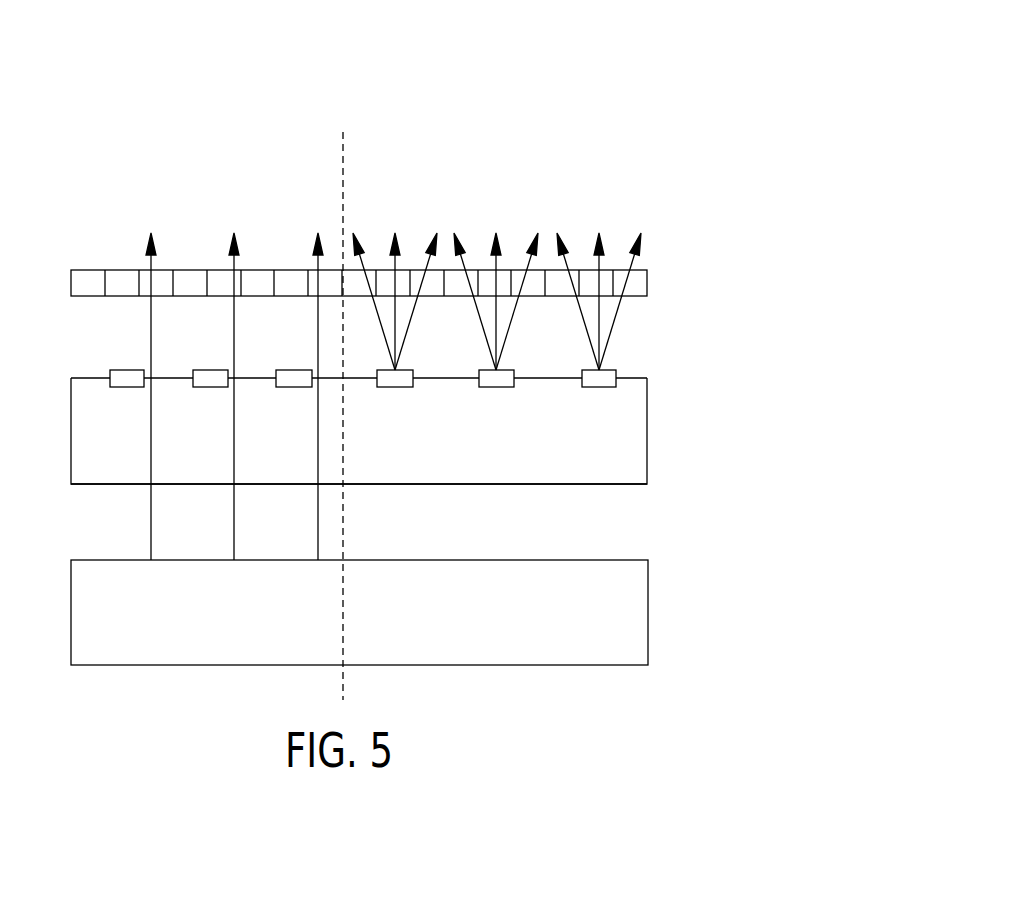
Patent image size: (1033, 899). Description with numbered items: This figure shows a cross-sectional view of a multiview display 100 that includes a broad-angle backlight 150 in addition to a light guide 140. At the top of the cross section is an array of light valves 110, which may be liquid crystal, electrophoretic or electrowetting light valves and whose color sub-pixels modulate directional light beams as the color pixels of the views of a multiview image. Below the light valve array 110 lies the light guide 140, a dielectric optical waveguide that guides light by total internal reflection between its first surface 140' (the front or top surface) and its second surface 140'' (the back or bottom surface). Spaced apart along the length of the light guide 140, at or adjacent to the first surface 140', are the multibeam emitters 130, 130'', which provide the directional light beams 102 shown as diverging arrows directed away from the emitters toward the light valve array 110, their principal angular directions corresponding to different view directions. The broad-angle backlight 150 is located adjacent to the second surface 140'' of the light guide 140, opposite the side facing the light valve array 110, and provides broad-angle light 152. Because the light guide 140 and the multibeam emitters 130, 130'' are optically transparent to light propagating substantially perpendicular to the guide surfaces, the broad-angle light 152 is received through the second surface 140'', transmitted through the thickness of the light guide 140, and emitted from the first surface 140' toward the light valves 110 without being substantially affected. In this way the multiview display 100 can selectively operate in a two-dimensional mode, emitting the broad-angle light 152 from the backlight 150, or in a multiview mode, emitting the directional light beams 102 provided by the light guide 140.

The multiview display 100 is at (620, 90).
The array of light valves 110 is at (92, 277).
The directional light beams 102 is at (618, 310).
The broad-angle light 152 is at (148, 343).
The light guide 140 is at (394, 433).
The first surface 140' is at (374, 344).
The second surface 140'' is at (359, 519).
The multibeam emitter 130 is at (338, 457).
The light emitting element 130'' is at (164, 437).
The broad-angle backlight 150 is at (650, 620).